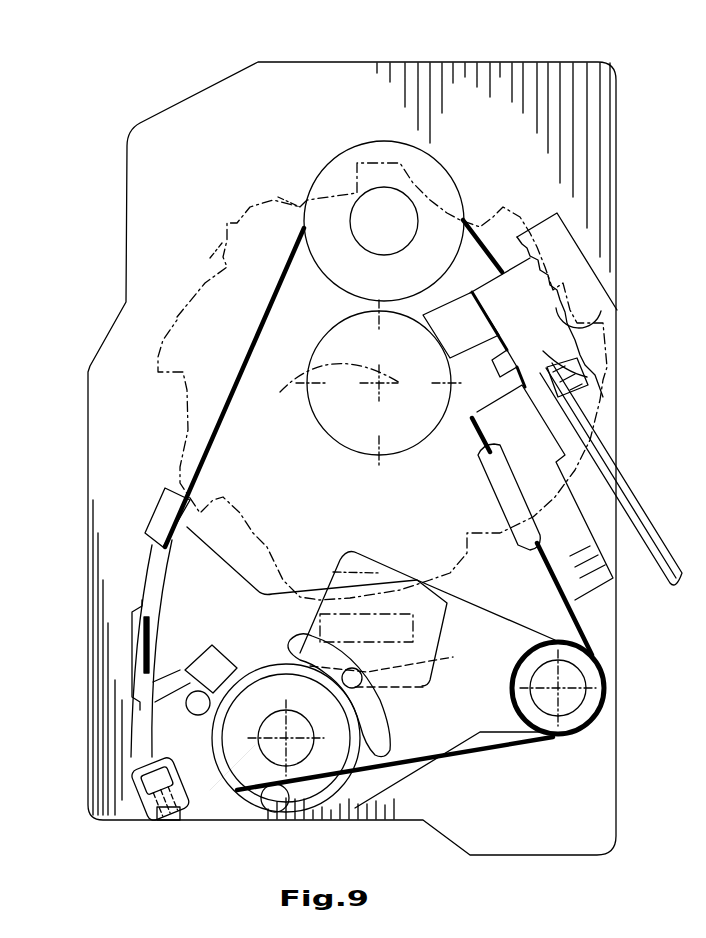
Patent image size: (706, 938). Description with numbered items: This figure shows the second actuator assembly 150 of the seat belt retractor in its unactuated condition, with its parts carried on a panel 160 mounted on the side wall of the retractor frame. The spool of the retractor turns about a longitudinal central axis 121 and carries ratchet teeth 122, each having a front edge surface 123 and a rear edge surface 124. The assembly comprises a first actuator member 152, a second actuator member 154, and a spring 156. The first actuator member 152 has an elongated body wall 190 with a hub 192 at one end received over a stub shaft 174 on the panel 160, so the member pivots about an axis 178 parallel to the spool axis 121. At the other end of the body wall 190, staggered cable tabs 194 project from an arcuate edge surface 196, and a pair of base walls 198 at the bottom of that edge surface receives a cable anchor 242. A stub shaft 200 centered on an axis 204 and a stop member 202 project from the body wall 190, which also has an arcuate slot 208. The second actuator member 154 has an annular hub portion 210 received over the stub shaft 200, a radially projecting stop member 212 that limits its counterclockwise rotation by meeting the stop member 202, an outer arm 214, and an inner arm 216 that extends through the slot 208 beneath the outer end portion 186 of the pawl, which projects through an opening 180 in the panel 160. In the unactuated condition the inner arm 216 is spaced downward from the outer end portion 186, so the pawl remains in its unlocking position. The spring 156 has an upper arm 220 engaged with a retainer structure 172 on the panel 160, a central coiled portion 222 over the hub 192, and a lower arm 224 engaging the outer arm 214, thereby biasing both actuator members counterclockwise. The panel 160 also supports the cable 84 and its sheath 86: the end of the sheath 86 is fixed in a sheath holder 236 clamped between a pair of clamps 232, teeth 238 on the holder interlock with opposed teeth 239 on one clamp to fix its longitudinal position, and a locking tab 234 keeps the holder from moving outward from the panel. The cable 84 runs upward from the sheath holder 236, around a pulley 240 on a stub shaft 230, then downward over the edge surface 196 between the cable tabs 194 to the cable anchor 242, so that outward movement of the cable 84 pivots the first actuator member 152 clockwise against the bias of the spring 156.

The panel 160 is at (512, 58).
The second actuator assembly 150 is at (78, 490).
The stub shaft 230 is at (388, 205).
The pulley 240 is at (335, 185).
The longitudinal central axis 121 is at (357, 383).
The body wall 190 is at (223, 570).
The cable 84 is at (487, 237).
The ratchet teeth 122 is at (240, 232).
The front edge surface 123 is at (210, 257).
The rear edge surface 124 is at (278, 196).
The clamps 232 is at (567, 233).
The teeth 238 is at (557, 305).
The opposed teeth 239 is at (603, 310).
The sheath holder 236 is at (603, 372).
The locking tab 234 is at (490, 372).
The sheath 86 is at (620, 470).
The retainer structure 172 is at (533, 425).
The first actuator member 152 is at (140, 568).
The cable tabs 194 is at (160, 512).
The arcuate edge surface 196 is at (137, 632).
The base walls 198 is at (133, 765).
The cable anchor 242 is at (157, 820).
The second actuator member 154 is at (250, 813).
The axis 204 is at (292, 745).
The outer arm 214 is at (273, 808).
The annular hub portion 210 is at (227, 785).
The stop member 212 is at (222, 663).
The stop member 202 is at (188, 690).
The stub shaft 200 is at (380, 770).
The arcuate slot 208 is at (390, 730).
The outer end portion 186 is at (373, 617).
The opening 180 is at (363, 562).
The inner arm 216 is at (420, 664).
The stub shaft 174 is at (580, 679).
The hub 192 is at (590, 665).
The central coiled portion 222 is at (603, 708).
The axis 178 is at (595, 730).
The lower arm 224 is at (476, 750).
The upper arm 220 is at (584, 605).
The spring 156 is at (598, 632).